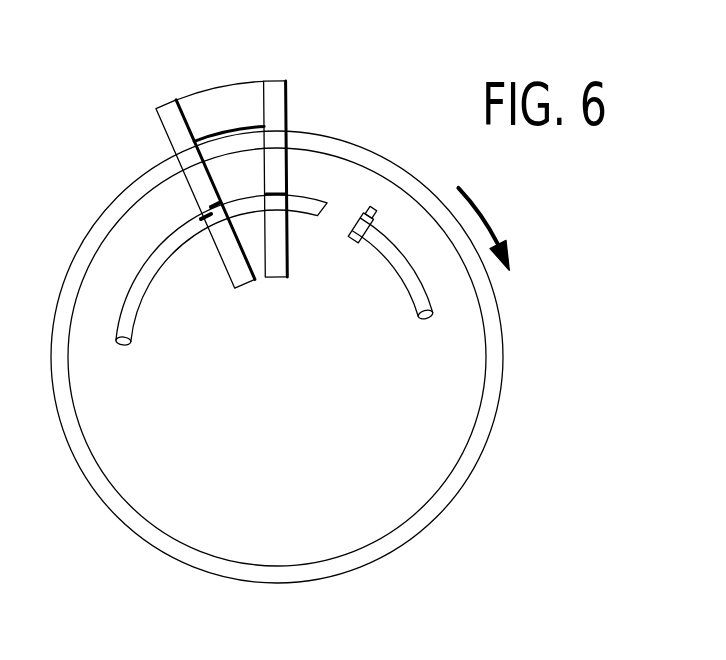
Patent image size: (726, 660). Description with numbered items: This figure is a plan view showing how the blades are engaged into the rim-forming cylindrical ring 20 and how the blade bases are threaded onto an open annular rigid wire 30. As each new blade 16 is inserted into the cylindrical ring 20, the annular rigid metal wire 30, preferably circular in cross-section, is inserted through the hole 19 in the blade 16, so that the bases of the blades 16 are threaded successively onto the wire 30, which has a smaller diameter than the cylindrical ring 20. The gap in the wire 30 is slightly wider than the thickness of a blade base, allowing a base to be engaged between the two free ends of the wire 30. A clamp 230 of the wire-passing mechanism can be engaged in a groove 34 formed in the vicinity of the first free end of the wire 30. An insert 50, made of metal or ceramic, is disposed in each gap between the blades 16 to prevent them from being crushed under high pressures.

The blade 16 is at (168, 110).
The hole 19 is at (198, 217).
The cylindrical ring 20 is at (80, 272).
The annular rigid metal wire 30 is at (137, 320).
The groove 34 is at (371, 233).
The insert 50 is at (222, 100).
The clamp 230 is at (362, 210).